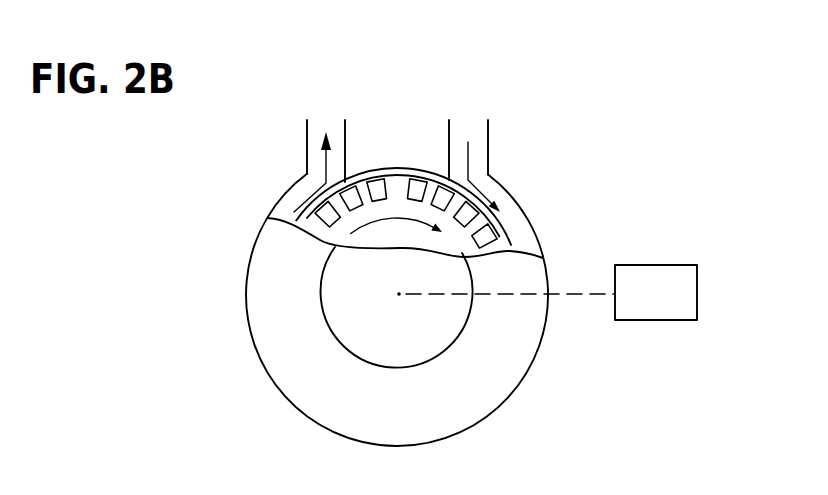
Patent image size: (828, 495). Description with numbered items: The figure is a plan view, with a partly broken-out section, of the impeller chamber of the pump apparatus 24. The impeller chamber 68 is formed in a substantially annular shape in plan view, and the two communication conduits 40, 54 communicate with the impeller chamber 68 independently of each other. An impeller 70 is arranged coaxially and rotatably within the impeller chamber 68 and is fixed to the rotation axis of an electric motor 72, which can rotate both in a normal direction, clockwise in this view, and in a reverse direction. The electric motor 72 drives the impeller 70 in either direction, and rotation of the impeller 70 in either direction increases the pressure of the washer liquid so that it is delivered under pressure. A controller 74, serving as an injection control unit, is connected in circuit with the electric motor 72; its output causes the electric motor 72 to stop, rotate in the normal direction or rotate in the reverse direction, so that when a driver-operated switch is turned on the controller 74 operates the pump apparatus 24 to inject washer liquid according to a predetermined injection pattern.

The pump apparatus 24 is at (600, 152).
The communication conduit 40 is at (302, 136).
The communication conduit 54 is at (539, 143).
The impeller chamber 68 is at (515, 205).
The impeller 70 is at (508, 237).
The electric motor 72 is at (436, 337).
The controller 74 is at (660, 310).